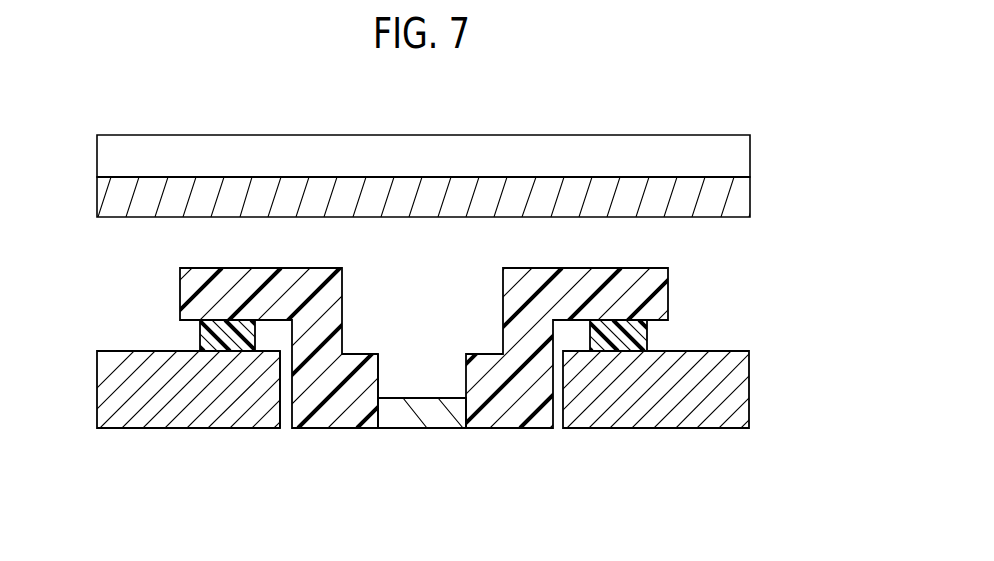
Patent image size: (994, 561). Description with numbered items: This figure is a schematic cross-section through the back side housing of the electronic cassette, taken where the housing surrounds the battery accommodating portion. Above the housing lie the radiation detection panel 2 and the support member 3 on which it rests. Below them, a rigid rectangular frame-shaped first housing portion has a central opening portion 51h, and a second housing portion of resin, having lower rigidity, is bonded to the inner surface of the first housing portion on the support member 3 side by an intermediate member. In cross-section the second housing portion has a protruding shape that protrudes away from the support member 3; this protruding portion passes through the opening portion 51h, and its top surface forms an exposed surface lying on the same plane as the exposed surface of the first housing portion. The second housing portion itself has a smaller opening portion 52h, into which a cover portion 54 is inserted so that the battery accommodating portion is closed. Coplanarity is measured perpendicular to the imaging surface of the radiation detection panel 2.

The radiation detection panel 2 is at (743, 156).
The support member 3 is at (743, 205).
The opening portion 51h is at (282, 415).
The opening portion 52h is at (380, 413).
The cover portion 54 is at (435, 418).